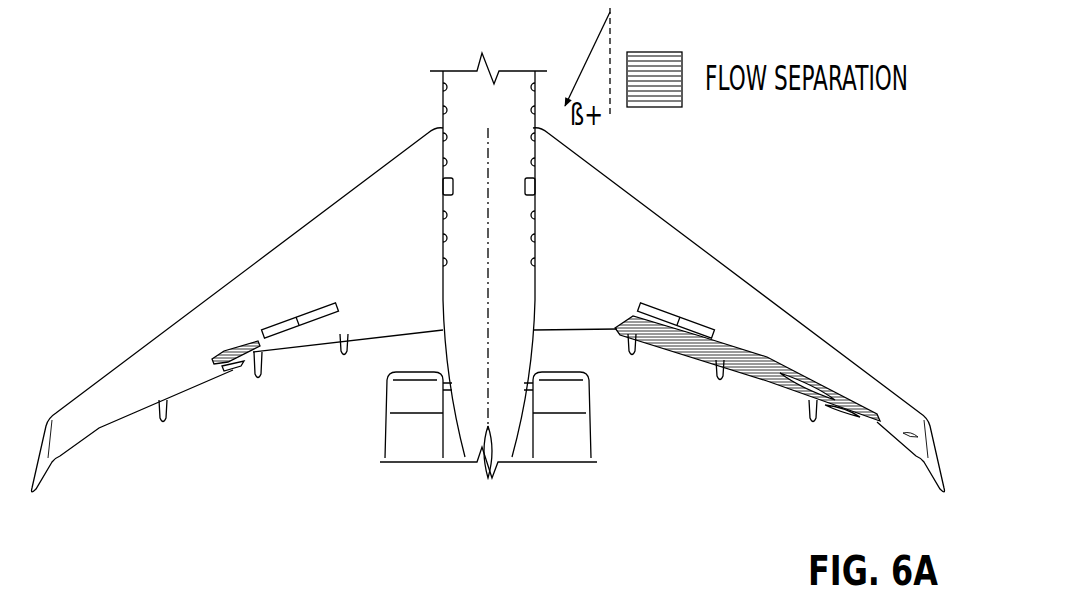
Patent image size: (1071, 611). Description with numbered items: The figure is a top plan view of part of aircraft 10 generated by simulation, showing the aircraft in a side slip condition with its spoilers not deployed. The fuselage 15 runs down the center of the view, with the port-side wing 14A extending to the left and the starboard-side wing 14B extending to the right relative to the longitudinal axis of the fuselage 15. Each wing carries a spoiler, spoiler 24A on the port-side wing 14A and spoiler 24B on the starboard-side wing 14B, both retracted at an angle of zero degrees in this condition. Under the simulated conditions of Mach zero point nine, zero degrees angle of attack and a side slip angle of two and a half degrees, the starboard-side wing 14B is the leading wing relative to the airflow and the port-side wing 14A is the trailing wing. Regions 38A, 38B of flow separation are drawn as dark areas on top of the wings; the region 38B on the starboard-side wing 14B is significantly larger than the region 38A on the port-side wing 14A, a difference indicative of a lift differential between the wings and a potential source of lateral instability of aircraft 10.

The aircraft 10 is at (210, 100).
The port-side wing 14A is at (230, 228).
The starboard-side wing 14B is at (806, 225).
The fuselage 15 is at (508, 121).
The spoiler 24A is at (305, 320).
The spoiler 24B is at (670, 316).
The region of flow separation 38A is at (236, 366).
The region of flow separation 38B is at (688, 338).